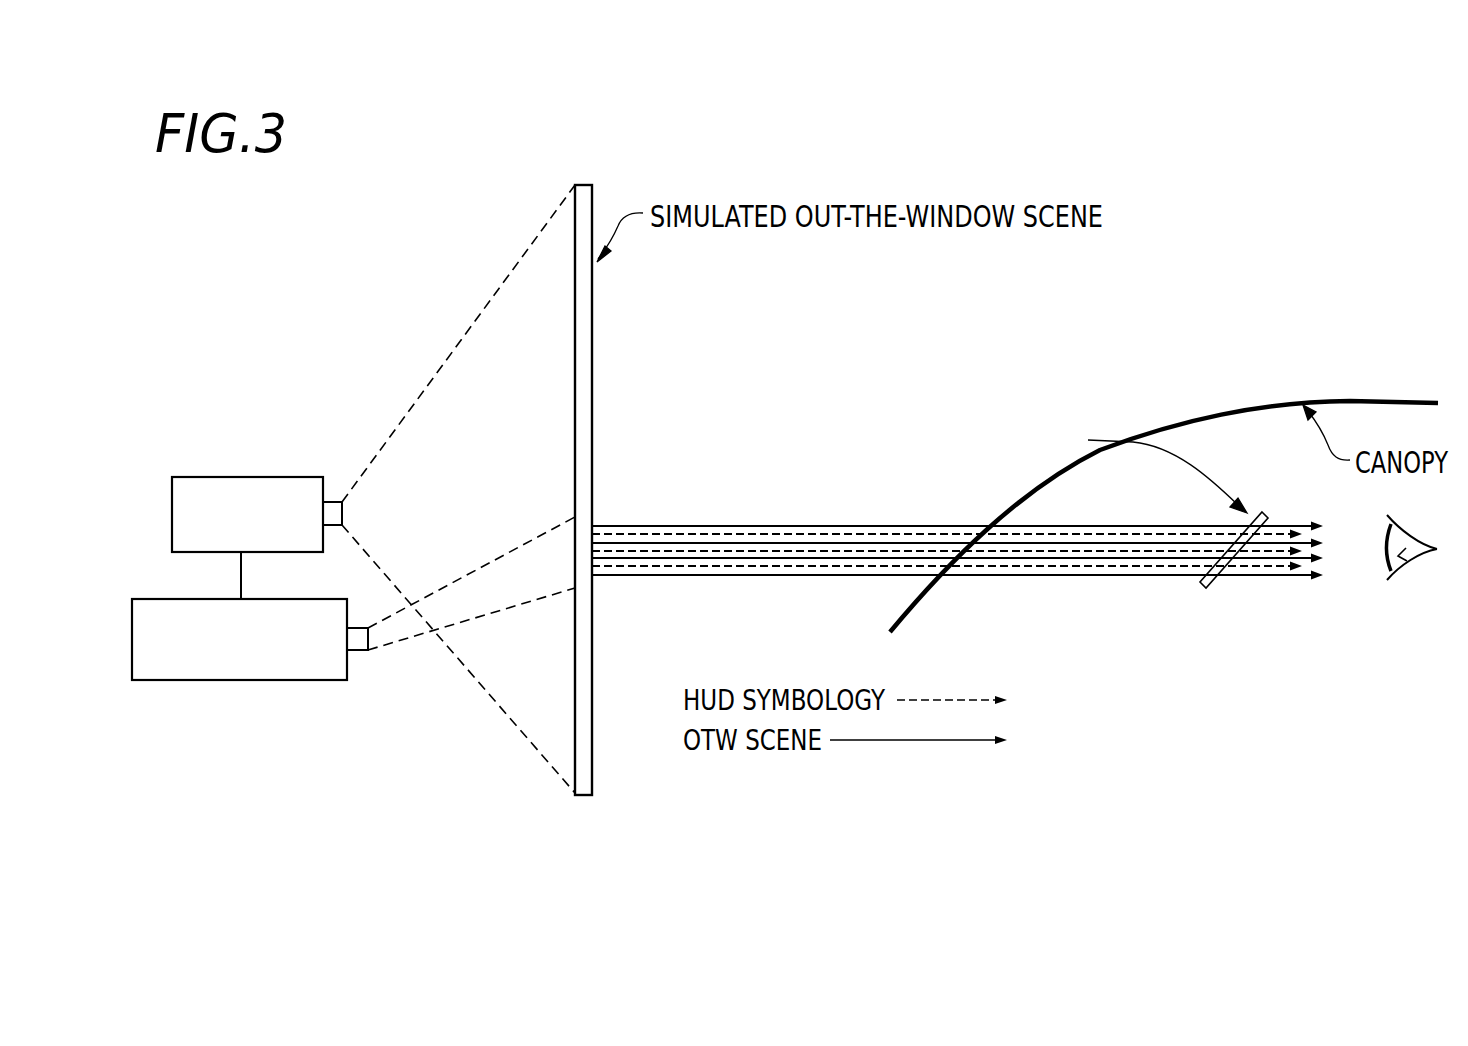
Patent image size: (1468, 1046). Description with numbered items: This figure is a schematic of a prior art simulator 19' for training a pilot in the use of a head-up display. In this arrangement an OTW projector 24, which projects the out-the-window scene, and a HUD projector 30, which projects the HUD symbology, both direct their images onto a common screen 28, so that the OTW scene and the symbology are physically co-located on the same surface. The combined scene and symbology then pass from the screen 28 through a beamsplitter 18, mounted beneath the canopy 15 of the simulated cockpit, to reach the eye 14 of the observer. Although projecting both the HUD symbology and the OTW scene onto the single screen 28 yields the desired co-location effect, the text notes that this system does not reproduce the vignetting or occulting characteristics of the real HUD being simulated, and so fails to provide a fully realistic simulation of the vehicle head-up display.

The OTW projector 24 is at (298, 480).
The HUD projector 30 is at (320, 673).
The screen 28 is at (593, 442).
The simulator 19' is at (1164, 474).
The canopy 15 is at (1173, 424).
The beamsplitter 18 is at (1203, 587).
The eye 14 is at (1402, 556).